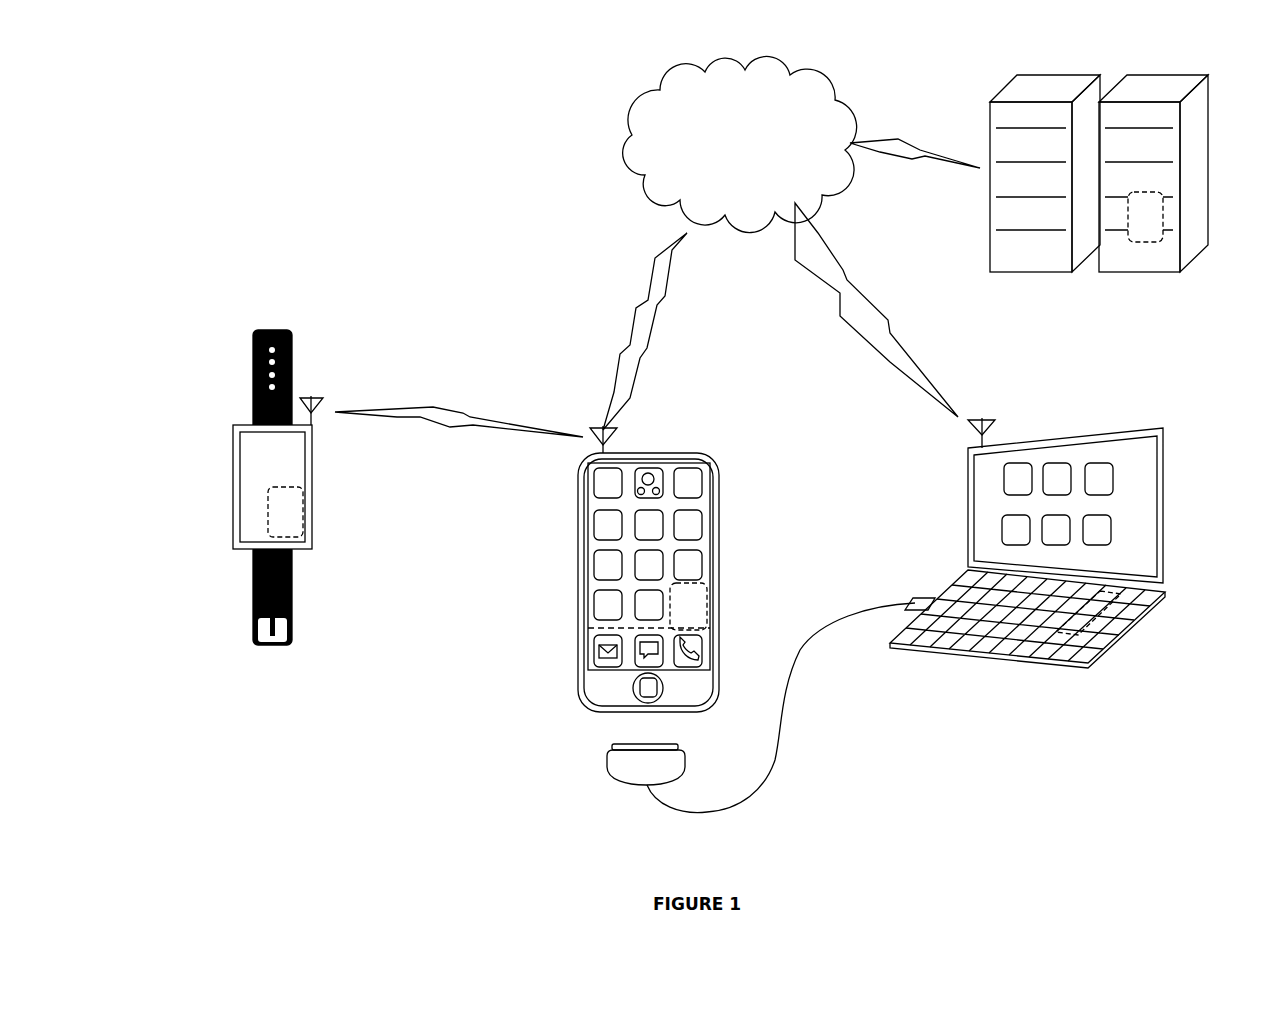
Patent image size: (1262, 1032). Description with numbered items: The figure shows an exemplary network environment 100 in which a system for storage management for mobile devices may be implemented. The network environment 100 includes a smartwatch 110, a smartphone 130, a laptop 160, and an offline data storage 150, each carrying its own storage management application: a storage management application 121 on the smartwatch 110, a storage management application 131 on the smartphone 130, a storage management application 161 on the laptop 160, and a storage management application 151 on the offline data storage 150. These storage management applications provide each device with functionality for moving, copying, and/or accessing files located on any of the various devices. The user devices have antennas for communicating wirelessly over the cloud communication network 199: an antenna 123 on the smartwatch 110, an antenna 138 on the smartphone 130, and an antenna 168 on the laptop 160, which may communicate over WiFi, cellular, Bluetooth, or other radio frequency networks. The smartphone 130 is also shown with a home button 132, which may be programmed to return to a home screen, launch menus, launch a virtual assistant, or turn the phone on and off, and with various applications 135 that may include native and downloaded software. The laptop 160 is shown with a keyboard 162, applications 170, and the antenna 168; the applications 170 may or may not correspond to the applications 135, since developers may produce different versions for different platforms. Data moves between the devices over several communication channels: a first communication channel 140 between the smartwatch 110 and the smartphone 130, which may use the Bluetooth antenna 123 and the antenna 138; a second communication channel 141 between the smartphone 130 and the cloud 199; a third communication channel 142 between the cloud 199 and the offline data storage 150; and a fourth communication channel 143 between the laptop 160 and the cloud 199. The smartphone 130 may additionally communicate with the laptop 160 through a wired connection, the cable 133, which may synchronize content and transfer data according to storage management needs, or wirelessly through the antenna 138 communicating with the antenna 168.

The network environment 100 is at (666, 453).
The smartwatch 110 is at (288, 468).
The storage management application 121 is at (306, 510).
The antenna 123 is at (340, 377).
The smartphone 130 is at (606, 568).
The storage management application 131 is at (709, 607).
The home button 132 is at (636, 687).
The cable 133 is at (619, 800).
The applications 135 is at (704, 527).
The antenna 138 is at (596, 424).
The first communication channel (comm1) 140 is at (459, 409).
The second communication channel (comm2) 141 is at (612, 331).
The third communication channel (comm3) 142 is at (915, 140).
The fourth communication channel (comm4) 143 is at (856, 310).
The offline data storage 150 is at (1099, 233).
The storage management application 151 is at (1164, 216).
The laptop 160 is at (1011, 588).
The storage management application 161 is at (1114, 623).
The keyboard 162 is at (1024, 619).
The antenna 168 is at (1001, 425).
The applications 170 is at (1001, 535).
The cloud communication network 199 is at (740, 144).